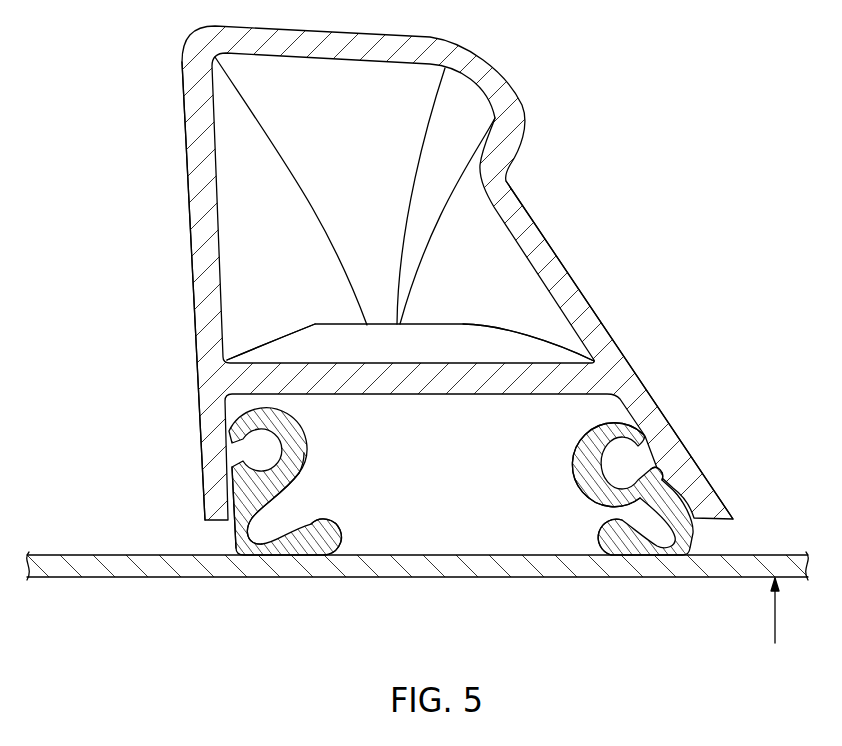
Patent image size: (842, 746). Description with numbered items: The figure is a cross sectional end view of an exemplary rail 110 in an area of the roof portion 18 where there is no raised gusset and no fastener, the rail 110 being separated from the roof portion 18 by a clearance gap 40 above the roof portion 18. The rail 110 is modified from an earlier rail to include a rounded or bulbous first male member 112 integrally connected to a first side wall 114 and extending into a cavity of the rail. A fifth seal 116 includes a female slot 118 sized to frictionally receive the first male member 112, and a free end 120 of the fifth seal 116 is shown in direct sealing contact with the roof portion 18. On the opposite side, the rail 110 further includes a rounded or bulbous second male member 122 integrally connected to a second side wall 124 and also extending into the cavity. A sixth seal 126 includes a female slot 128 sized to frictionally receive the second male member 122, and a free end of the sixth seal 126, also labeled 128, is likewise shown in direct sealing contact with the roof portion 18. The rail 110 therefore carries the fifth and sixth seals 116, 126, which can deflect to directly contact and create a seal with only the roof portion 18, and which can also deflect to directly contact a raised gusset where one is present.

The rail 110 is at (571, 152).
The second side wall 124 is at (198, 272).
The first side wall 114 is at (617, 365).
The second male member 122 is at (283, 481).
The female slot 128 is at (288, 470).
The sixth seal 126 is at (287, 489).
The first male member 112 is at (649, 483).
The female slot 118 is at (596, 480).
The free end 120 is at (600, 542).
The fifth seal 116 is at (805, 520).
The roof portion 18 is at (137, 570).
The clearance gap 40 is at (773, 612).